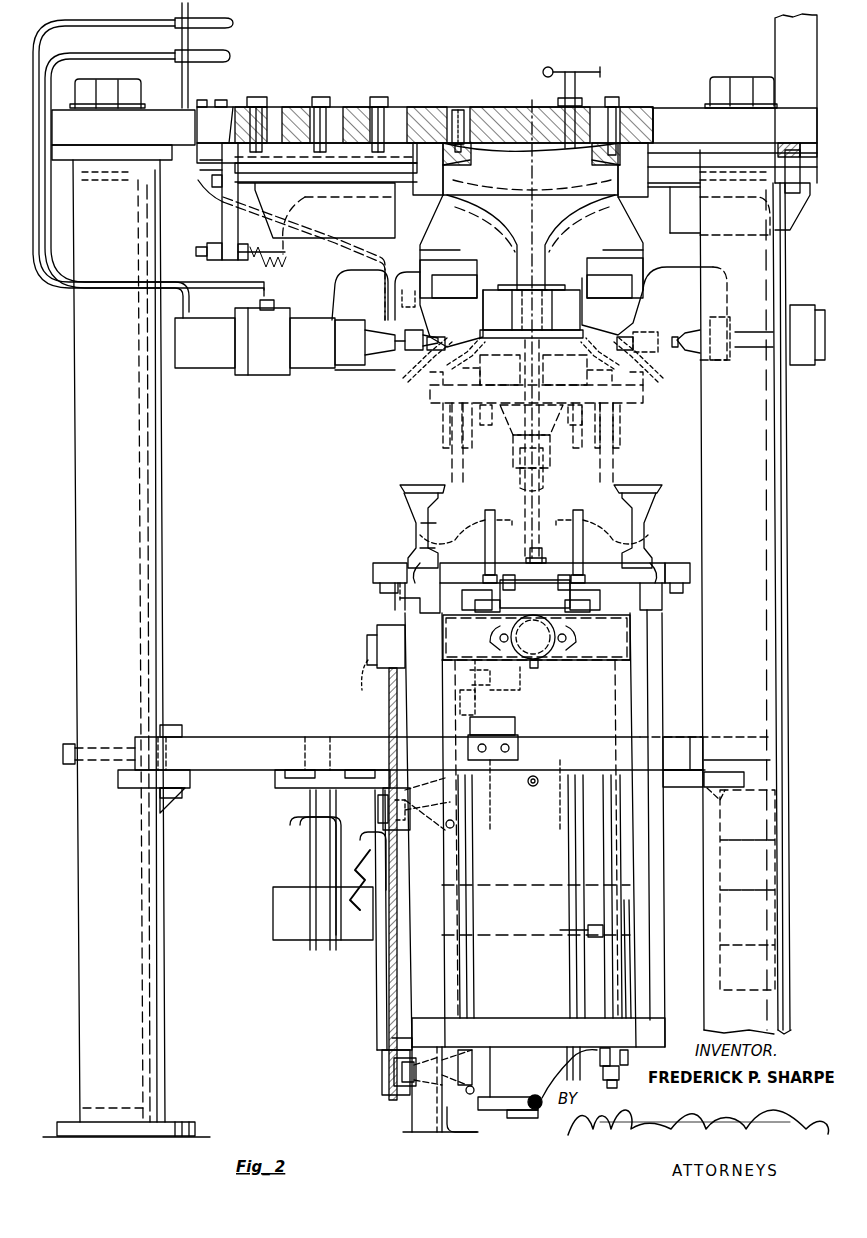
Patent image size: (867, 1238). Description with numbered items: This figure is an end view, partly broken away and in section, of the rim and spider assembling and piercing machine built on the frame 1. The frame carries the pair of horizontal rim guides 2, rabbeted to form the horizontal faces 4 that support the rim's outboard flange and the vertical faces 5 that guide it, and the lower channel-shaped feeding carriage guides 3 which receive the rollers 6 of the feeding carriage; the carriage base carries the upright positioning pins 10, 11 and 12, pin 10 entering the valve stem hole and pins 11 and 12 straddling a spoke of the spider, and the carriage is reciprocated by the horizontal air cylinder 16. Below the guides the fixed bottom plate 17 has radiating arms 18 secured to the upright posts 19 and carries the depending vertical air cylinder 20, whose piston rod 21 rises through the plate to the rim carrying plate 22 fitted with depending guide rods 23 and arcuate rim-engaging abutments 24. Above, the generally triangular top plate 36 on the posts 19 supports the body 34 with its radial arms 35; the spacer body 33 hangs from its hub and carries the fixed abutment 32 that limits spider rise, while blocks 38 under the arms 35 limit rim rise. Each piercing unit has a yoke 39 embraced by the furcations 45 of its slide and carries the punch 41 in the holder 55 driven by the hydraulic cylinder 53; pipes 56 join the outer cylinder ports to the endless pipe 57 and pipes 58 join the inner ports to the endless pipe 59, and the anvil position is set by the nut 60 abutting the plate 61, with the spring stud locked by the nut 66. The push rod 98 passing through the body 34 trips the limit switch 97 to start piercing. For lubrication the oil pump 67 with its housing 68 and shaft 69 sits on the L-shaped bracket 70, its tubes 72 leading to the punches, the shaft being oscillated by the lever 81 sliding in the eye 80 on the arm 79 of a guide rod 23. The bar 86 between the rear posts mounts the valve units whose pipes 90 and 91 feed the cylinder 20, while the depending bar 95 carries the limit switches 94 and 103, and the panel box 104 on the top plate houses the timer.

The frame 1 is at (366, 611).
The rim guides 2 is at (373, 575).
The feeding carriage guides 3 is at (488, 612).
The horizontal longitudinally extending faces 4 is at (420, 570).
The vertical longitudinally extending faces 5 is at (410, 555).
The rollers 6 is at (450, 248).
The positioning pin 10 is at (536, 548).
The positioning pin 11 is at (488, 510).
The positioning pin 12 is at (573, 510).
The air cylinder 16 is at (540, 648).
The bottom plate 17 is at (371, 726).
The radiating arms 18 is at (218, 740).
The upright posts 19 is at (150, 504).
The vertical air cylinder 20 is at (541, 871).
The piston rod 21 is at (548, 460).
The rim carrying plate 22 is at (646, 395).
The guide rods 23 is at (468, 828).
The arcuate abutments 24 is at (430, 380).
The fixed abutment 32 is at (580, 332).
The spacer body 33 is at (579, 298).
The body 34 is at (540, 251).
The radial arms 35 is at (618, 178).
The top plate 36 is at (476, 108).
The fixed arcuate abutments 38 is at (604, 254).
The yoke 39 is at (348, 268).
The punch 41 is at (402, 370).
The depending furcations 45 is at (390, 217).
The hydraulic cylinder 53 is at (203, 368).
The holder 55 is at (383, 350).
The pipes 56 is at (128, 318).
The endless pipe 57 is at (226, 24).
The pipes 58 is at (244, 292).
The endless pipe 59 is at (226, 58).
The nut 60 is at (205, 182).
The plate 61 is at (227, 222).
The nut 66 is at (220, 260).
The oil pump 67 is at (272, 929).
The housing 68 is at (304, 934).
The shaft 69 is at (582, 932).
The L-shaped bracket 70 is at (334, 912).
The tube 72 is at (385, 309).
The arm 79 is at (603, 1078).
The eye 80 is at (628, 1058).
The lever 81 is at (626, 958).
The bar 86 is at (728, 982).
The pipe 90 is at (542, 1106).
The pipe 91 is at (535, 788).
The limit switch 94 is at (382, 808).
The bar 95 is at (386, 993).
The limit switch 97 is at (565, 64).
The push rod 98 is at (533, 148).
The limit switch 103 is at (380, 1082).
The panel box 104 is at (780, 58).